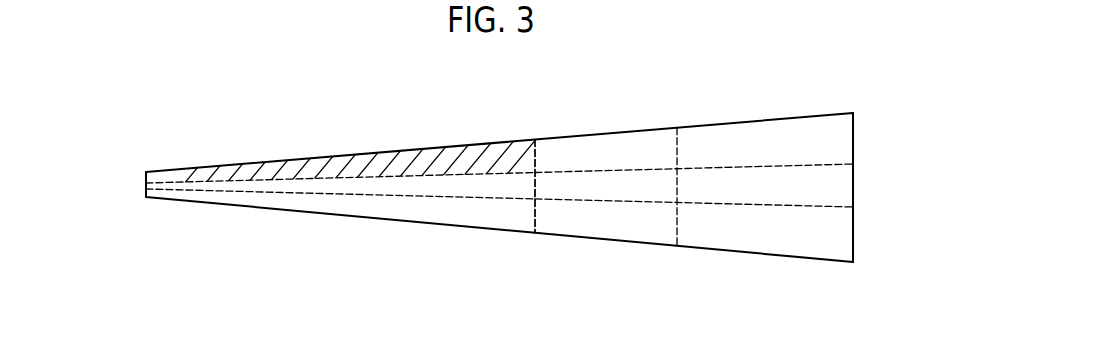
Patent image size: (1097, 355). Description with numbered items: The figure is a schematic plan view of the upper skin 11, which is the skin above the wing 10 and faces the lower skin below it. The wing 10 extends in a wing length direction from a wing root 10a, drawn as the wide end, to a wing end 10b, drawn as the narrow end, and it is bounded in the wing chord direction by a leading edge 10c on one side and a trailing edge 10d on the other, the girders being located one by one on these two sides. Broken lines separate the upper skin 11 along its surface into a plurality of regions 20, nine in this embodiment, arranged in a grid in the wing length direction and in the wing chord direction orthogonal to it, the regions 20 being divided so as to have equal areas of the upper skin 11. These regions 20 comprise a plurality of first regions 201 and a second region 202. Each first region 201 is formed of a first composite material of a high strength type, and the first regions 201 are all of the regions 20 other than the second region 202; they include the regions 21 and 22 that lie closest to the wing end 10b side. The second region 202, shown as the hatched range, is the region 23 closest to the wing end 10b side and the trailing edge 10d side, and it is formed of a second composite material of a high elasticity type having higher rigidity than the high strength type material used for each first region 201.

The wing 10 is at (858, 96).
The wing root 10a is at (853, 183).
The wing end 10b is at (146, 178).
The leading edge 10c is at (560, 234).
The trailing edge 10d is at (559, 137).
The upper skin 11 is at (873, 139).
The regions 20 is at (499, 189).
The region 21 is at (300, 202).
The region 22 is at (467, 189).
The region 23 is at (340, 158).
The first region 201 is at (499, 189).
The second region 202 is at (360, 150).